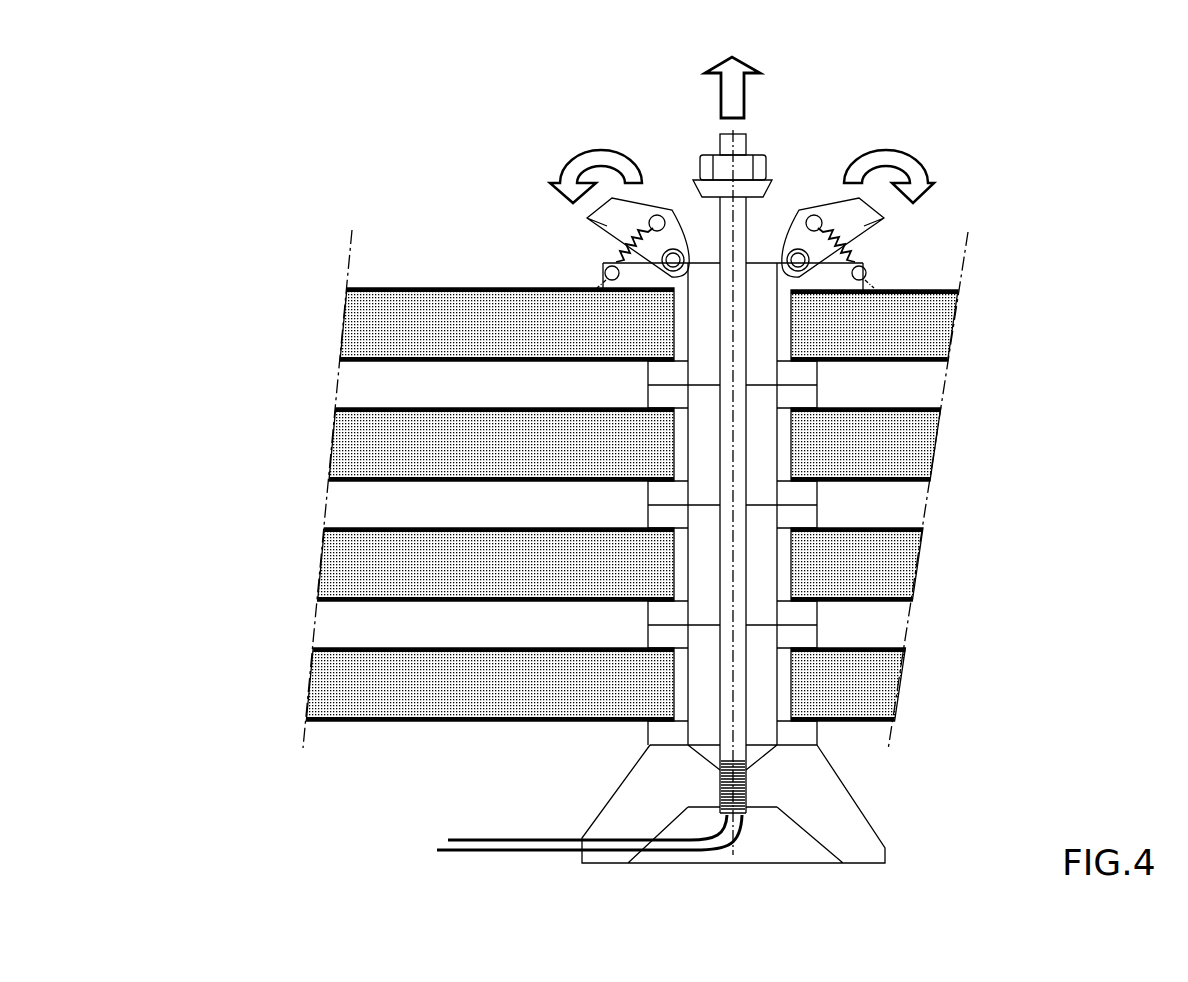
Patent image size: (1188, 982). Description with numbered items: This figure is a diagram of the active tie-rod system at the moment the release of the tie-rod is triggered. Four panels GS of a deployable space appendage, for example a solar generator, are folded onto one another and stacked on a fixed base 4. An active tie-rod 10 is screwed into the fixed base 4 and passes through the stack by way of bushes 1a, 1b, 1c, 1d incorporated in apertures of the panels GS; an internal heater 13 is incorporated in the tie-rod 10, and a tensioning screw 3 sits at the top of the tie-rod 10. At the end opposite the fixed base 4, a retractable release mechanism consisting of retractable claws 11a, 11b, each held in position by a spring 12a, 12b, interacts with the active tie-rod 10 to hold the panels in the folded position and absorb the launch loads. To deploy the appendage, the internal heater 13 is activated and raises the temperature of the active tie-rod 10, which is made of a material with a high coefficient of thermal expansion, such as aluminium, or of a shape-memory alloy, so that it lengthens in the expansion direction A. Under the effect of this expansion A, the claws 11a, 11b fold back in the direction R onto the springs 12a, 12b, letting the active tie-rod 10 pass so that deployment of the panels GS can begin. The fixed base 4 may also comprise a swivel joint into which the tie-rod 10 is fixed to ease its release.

The glass sheet GS is at (363, 333).
The active tie-rod 10 is at (738, 736).
The bush 1a is at (655, 373).
The bush 1b is at (655, 493).
The bush 1c is at (660, 617).
The bush 1d is at (653, 737).
The fixed base 4 is at (862, 827).
The internal heater 13 is at (437, 846).
The tensioning screw 3 is at (760, 160).
The expansion A is at (735, 73).
The folding back R is at (592, 162).
The retractable claw 11a is at (587, 218).
The spring 12a is at (620, 258).
The retractable claw 11b is at (880, 213).
The spring 12b is at (855, 255).